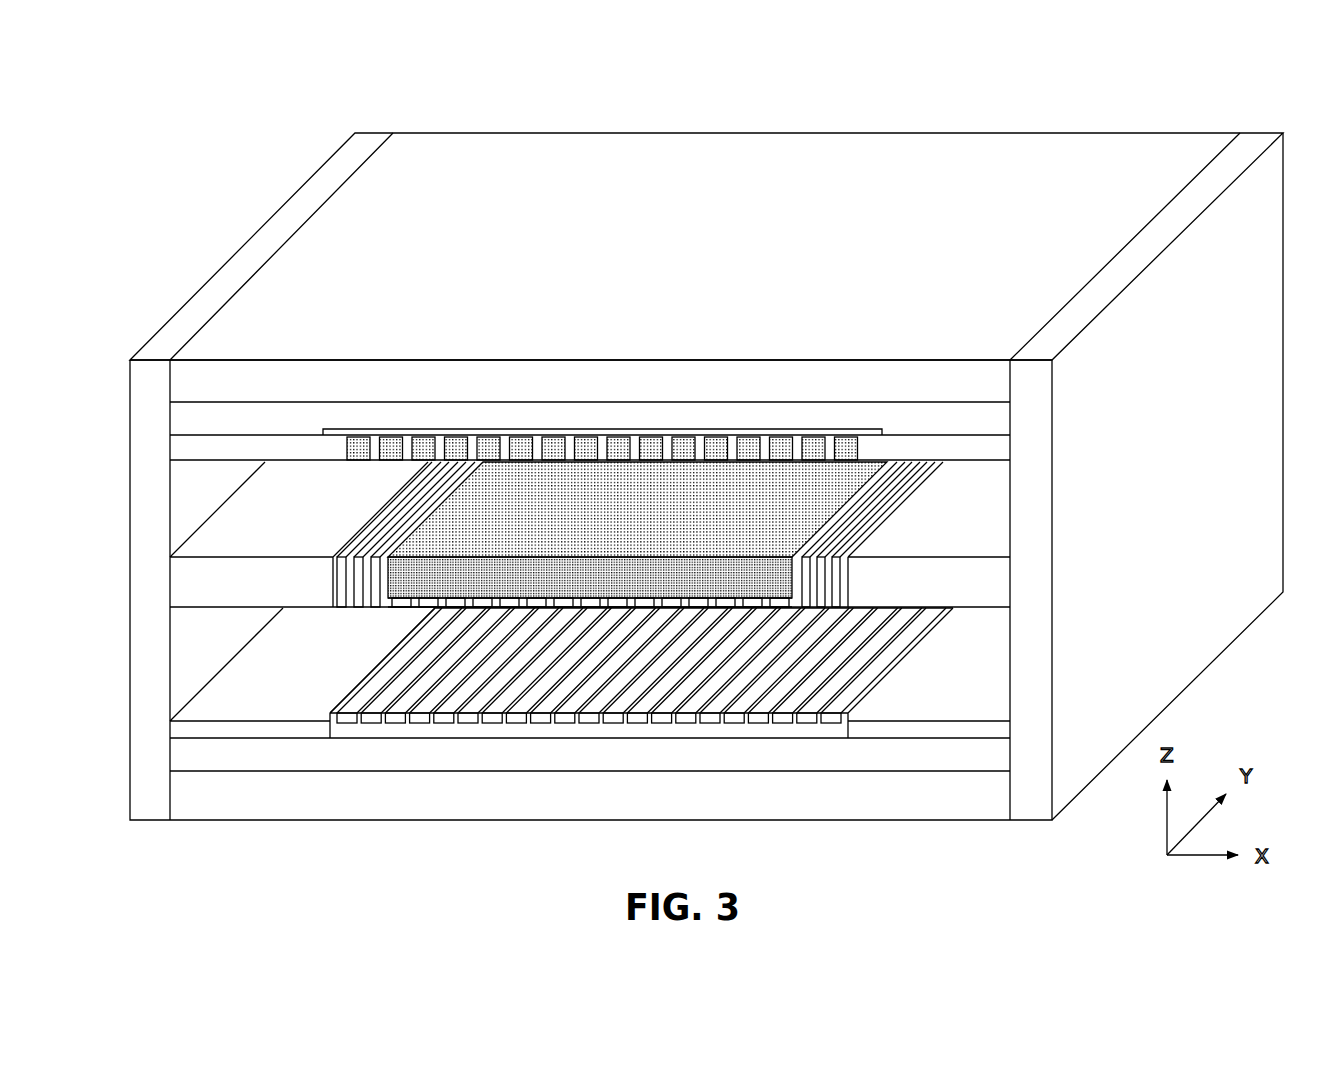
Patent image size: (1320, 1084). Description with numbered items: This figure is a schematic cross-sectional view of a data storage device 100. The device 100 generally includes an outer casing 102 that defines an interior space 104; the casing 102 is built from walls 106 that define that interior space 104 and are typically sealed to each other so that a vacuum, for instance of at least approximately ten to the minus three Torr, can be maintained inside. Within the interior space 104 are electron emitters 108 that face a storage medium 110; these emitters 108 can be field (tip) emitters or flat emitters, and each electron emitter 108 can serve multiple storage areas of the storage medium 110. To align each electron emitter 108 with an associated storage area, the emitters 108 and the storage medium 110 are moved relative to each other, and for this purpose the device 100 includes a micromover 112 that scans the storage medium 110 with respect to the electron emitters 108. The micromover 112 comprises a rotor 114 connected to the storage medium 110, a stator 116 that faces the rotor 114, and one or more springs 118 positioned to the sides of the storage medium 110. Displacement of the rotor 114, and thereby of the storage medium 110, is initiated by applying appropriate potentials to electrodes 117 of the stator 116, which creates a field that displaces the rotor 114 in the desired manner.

The data storage device 100 is at (1220, 117).
The outer casing 102 is at (1007, 145).
The interior space 104 is at (206, 658).
The walls 106 is at (1099, 143).
The electron emitters 108 is at (390, 443).
The storage medium 110 is at (606, 589).
The micromover 112 is at (321, 757).
The rotor 114 is at (398, 624).
The stator 116 is at (603, 730).
The electrodes 117 is at (354, 706).
The springs 118 is at (330, 534).